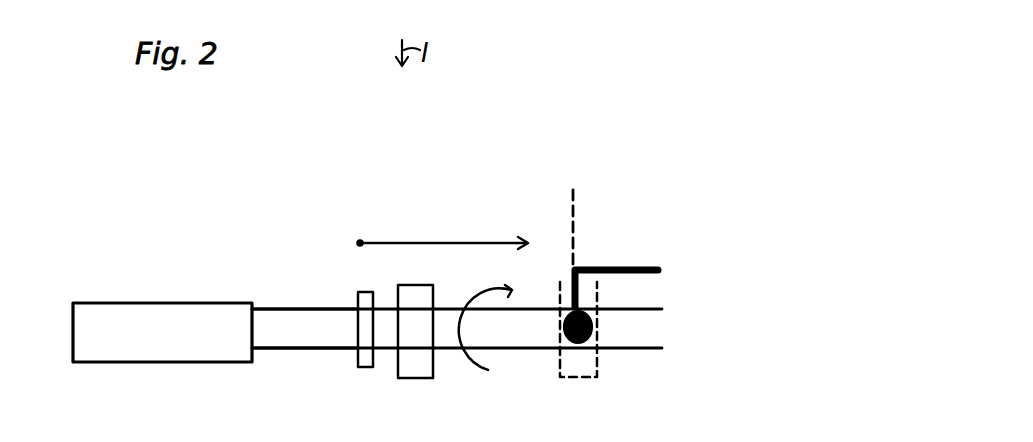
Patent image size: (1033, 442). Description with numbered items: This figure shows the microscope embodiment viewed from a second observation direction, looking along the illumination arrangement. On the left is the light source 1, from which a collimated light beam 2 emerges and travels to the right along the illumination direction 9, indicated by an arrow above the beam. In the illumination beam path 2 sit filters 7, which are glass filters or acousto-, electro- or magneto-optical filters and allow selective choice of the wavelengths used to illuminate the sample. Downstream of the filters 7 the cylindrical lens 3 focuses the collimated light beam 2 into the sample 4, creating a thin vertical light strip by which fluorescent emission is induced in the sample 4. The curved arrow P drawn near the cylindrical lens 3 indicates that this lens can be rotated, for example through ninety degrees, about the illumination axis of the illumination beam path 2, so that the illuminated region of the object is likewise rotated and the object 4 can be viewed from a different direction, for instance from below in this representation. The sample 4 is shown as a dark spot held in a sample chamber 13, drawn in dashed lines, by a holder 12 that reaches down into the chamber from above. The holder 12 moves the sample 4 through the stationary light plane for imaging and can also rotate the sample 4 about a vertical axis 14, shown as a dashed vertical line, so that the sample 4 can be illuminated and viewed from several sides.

The light source 1 is at (143, 327).
The collimated light beam 2 is at (342, 317).
The cylindrical lens 3 is at (423, 367).
The sample 4 is at (598, 322).
The filters 7 is at (368, 367).
The illumination direction 9 is at (403, 242).
The holder 12 is at (633, 263).
The sample chamber 13 is at (583, 365).
The vertical axis 14 is at (577, 193).
The arrow P is at (485, 311).